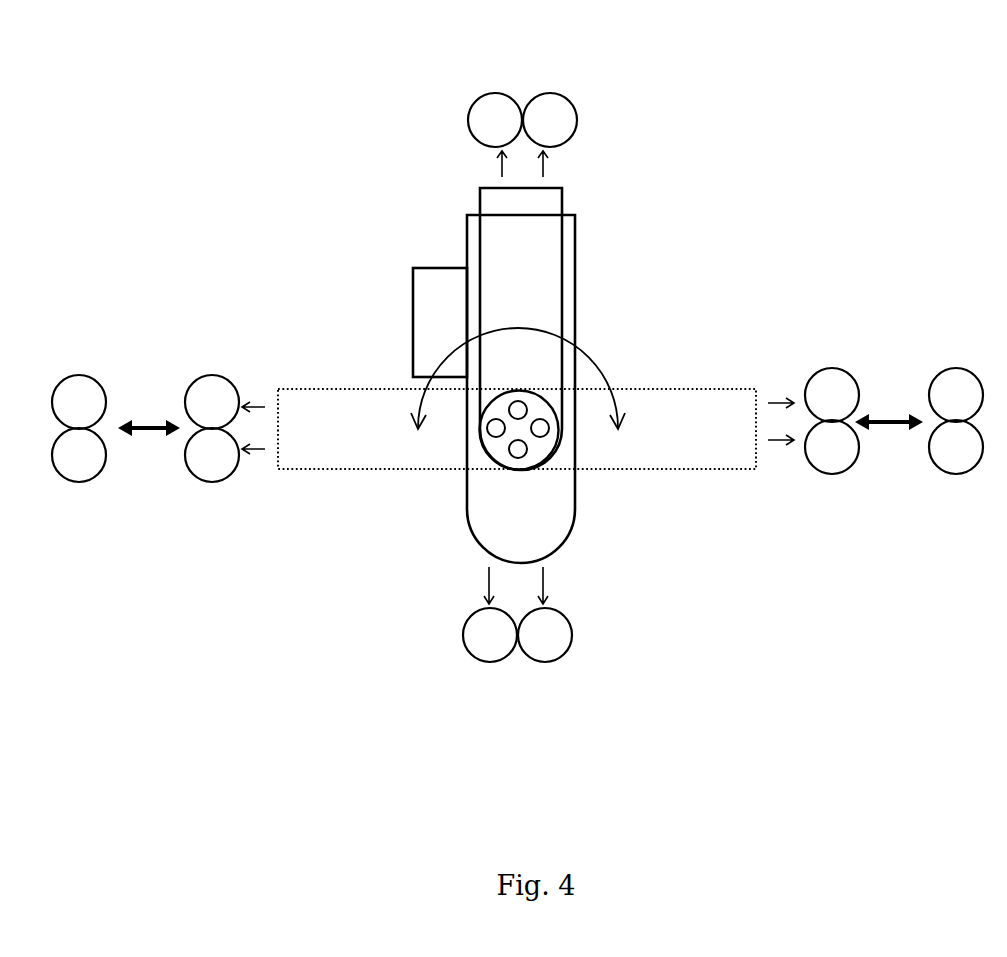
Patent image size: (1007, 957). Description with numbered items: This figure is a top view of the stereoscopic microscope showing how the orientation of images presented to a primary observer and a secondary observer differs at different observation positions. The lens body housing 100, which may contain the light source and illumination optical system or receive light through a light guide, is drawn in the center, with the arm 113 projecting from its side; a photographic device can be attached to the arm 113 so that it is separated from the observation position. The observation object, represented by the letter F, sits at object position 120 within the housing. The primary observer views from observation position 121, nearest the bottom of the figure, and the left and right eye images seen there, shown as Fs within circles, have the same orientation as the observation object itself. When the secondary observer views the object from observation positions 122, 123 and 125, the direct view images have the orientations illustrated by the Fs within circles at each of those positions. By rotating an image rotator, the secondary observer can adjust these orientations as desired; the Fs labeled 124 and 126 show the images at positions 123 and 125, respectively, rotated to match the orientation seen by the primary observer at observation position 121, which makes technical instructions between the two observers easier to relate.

The lens body housing 100 is at (572, 285).
The arm 113 is at (430, 281).
The object position 120 is at (525, 533).
The observation position 121 is at (545, 662).
The observation position 122 is at (548, 93).
The observation position 123 is at (832, 368).
The orientation of images adjusted by the image rotator 124 is at (955, 470).
The observation position 125 is at (214, 375).
The orientation of images adjusted by the image rotator 126 is at (77, 482).